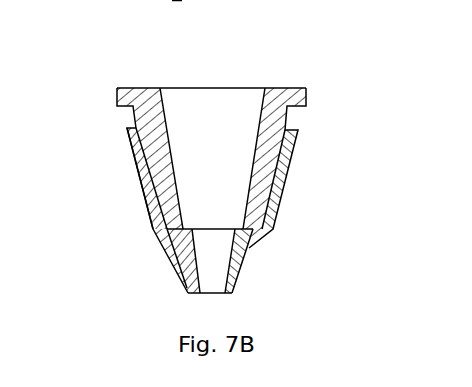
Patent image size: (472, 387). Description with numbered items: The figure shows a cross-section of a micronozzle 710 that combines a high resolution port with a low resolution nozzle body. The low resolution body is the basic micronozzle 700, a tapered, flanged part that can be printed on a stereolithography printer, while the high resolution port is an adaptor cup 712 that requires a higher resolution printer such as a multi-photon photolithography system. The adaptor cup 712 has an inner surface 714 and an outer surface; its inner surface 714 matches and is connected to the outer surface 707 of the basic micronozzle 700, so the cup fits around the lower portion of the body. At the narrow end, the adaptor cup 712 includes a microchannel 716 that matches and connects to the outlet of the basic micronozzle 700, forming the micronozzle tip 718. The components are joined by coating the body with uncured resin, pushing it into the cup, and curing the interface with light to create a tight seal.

The micronozzle 710 is at (278, 66).
The basic micronozzle 700 is at (308, 88).
The outer surface 707 is at (128, 128).
The adaptor cup 712 is at (286, 183).
The inner surface 714 is at (142, 190).
The microchannel 716 is at (220, 284).
The micronozzle tip 718 is at (170, 258).